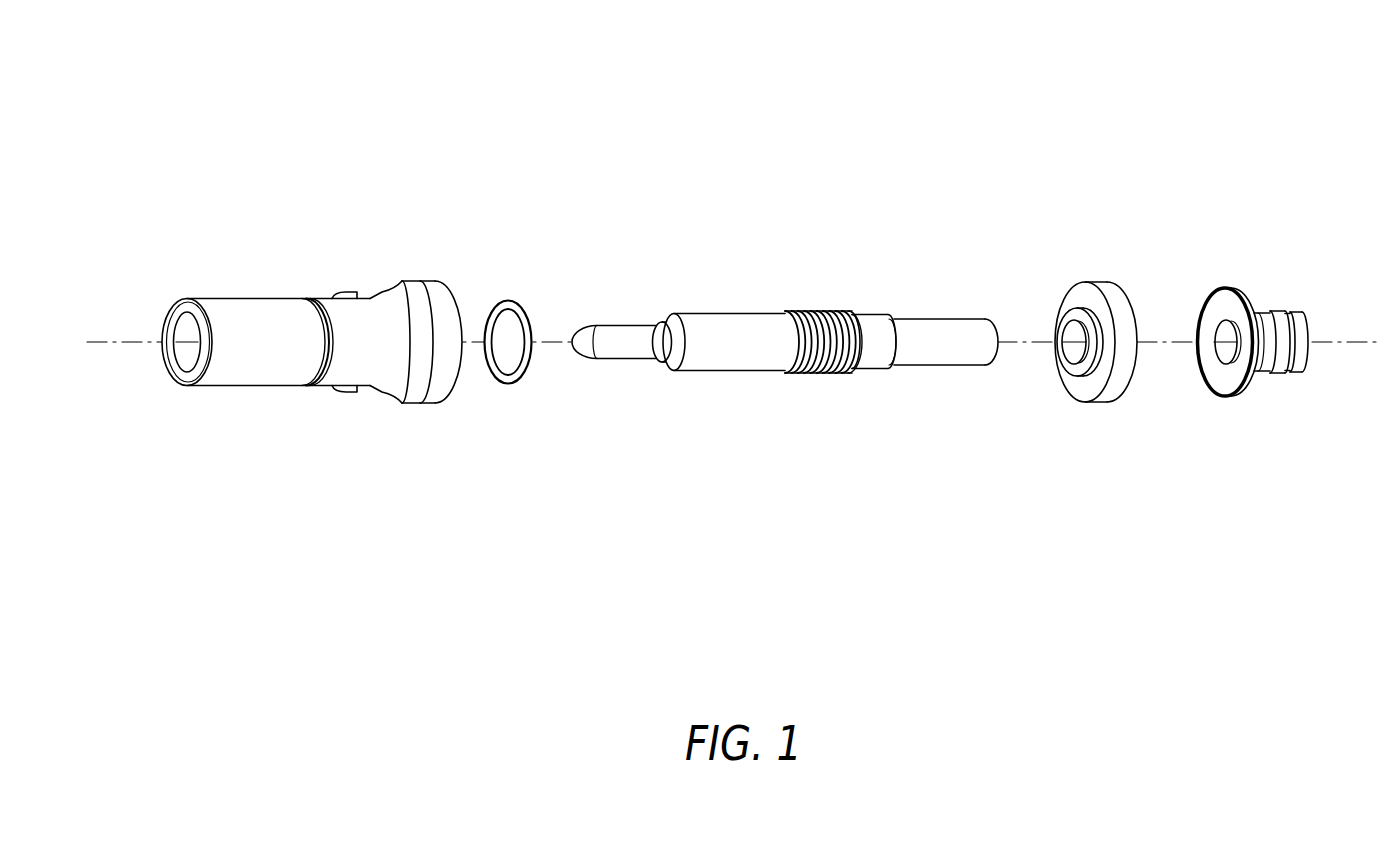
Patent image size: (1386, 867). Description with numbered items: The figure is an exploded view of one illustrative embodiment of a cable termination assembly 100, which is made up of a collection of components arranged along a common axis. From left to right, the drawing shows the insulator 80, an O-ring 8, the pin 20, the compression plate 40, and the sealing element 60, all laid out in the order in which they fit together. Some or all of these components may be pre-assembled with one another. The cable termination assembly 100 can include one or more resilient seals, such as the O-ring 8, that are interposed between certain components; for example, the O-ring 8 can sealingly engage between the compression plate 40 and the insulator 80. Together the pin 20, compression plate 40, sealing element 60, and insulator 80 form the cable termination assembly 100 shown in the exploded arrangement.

The cable termination assembly 100 is at (1115, 110).
The insulator 80 is at (315, 405).
The O-rings 8 is at (515, 302).
The pin 20 is at (723, 405).
The compression plate 40 is at (1082, 428).
The sealing element 60 is at (1263, 428).